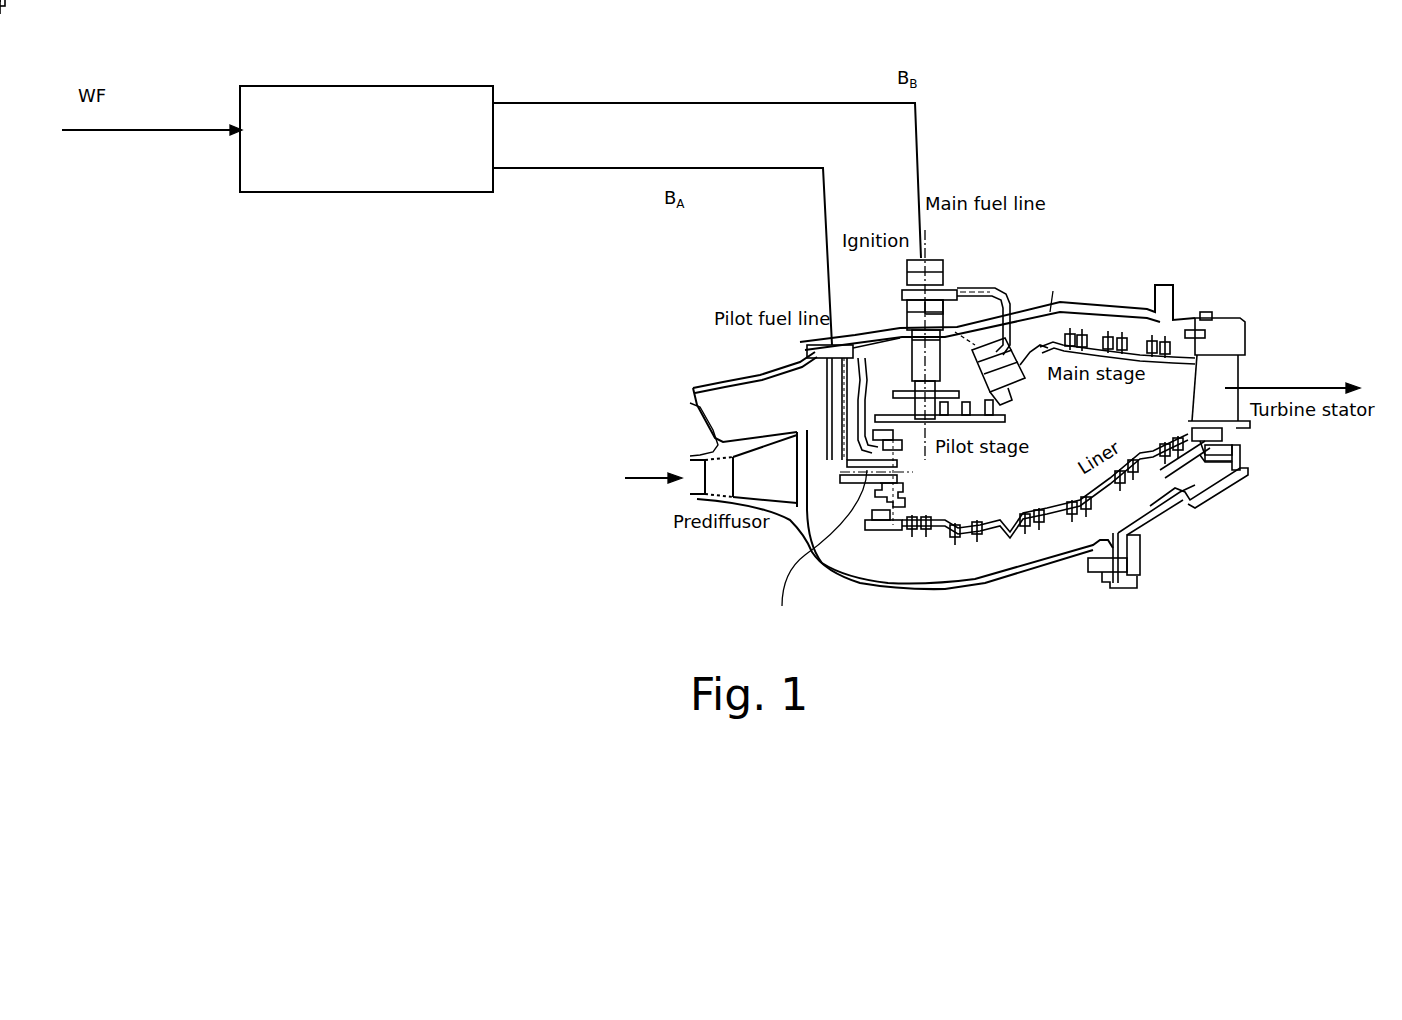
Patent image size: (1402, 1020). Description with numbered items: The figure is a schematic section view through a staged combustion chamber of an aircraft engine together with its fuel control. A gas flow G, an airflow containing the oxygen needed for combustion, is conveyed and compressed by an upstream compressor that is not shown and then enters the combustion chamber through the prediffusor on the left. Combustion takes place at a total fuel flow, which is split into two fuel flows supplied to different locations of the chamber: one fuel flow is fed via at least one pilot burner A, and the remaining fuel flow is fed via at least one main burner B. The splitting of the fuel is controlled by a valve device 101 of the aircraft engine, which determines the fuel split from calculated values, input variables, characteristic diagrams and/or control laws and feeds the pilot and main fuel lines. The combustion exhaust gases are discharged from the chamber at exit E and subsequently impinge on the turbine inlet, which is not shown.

The valve device 101 is at (366, 139).
The pilot burner A is at (821, 550).
The main burner B is at (1051, 291).
The gas flow G is at (640, 478).
The exit E is at (1292, 378).